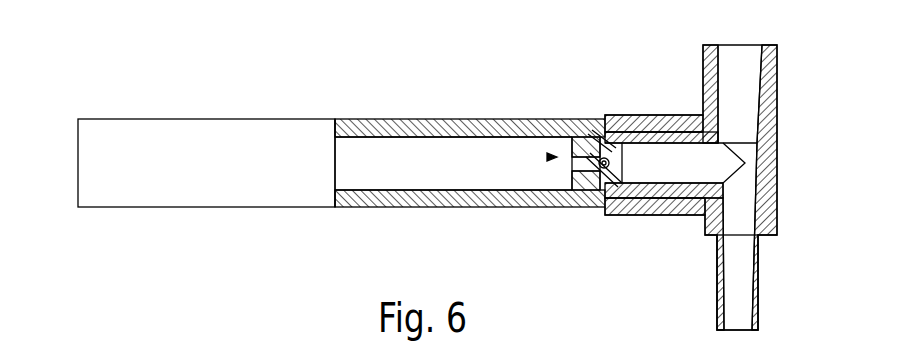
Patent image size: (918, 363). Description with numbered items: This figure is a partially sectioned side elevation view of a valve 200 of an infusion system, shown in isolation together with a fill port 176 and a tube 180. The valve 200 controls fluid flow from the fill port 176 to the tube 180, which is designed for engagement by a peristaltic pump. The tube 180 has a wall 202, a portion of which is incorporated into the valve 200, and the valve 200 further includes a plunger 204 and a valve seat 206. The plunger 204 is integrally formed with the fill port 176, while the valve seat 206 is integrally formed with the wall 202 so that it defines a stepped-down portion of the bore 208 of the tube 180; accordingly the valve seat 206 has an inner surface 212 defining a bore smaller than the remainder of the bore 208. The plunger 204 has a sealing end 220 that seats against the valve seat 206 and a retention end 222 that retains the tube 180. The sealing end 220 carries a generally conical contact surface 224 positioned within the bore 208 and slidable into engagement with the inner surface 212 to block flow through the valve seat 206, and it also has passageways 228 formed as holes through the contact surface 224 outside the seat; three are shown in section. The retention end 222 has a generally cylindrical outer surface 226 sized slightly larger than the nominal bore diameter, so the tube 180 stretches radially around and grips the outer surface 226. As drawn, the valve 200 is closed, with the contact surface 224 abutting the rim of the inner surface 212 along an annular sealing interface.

The valve 200 is at (190, 45).
The tube 180 is at (198, 224).
The wall 202 is at (377, 126).
The bore 208 is at (377, 158).
The valve seat 206 is at (548, 157).
The contact surface 224 is at (578, 142).
The passageways 228 is at (632, 117).
The plunger 204 is at (644, 110).
The inner surface 212 is at (570, 168).
The sealing end 220 is at (580, 214).
The outer surface 226 is at (660, 202).
The retention end 222 is at (691, 224).
The fill port 176 is at (799, 258).